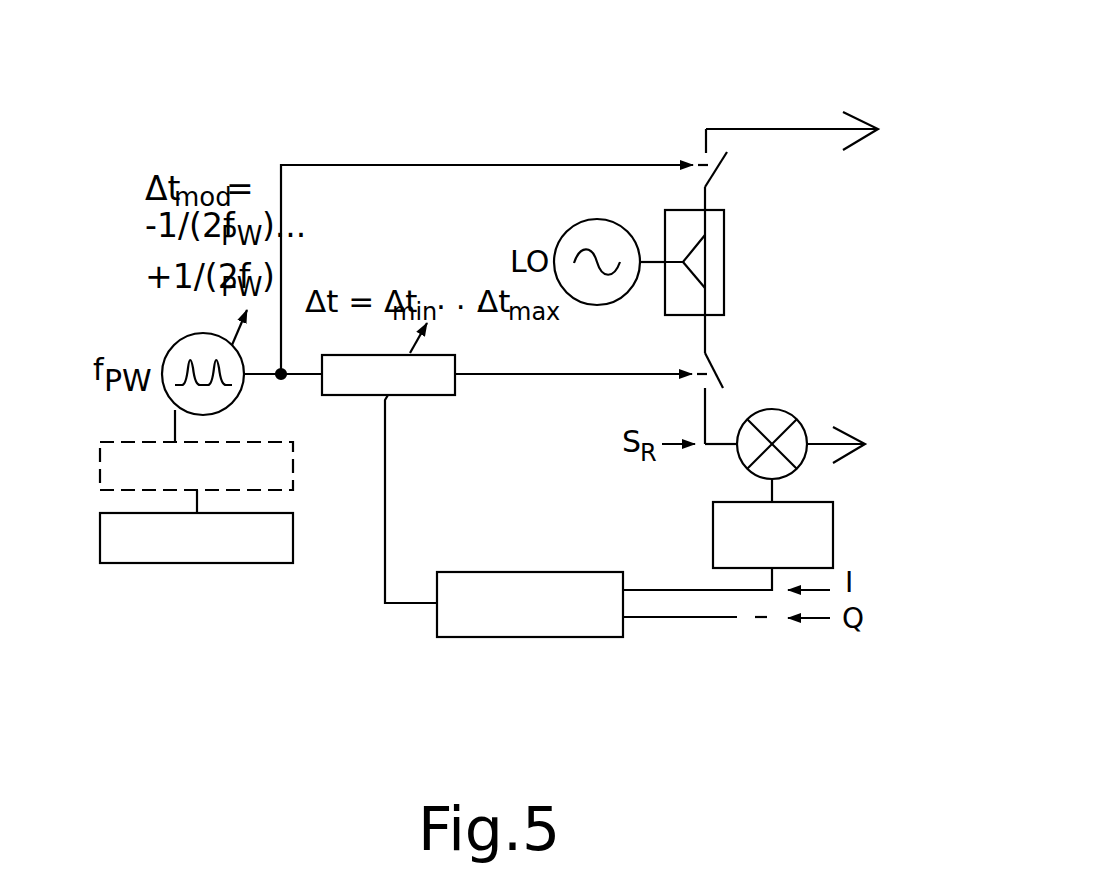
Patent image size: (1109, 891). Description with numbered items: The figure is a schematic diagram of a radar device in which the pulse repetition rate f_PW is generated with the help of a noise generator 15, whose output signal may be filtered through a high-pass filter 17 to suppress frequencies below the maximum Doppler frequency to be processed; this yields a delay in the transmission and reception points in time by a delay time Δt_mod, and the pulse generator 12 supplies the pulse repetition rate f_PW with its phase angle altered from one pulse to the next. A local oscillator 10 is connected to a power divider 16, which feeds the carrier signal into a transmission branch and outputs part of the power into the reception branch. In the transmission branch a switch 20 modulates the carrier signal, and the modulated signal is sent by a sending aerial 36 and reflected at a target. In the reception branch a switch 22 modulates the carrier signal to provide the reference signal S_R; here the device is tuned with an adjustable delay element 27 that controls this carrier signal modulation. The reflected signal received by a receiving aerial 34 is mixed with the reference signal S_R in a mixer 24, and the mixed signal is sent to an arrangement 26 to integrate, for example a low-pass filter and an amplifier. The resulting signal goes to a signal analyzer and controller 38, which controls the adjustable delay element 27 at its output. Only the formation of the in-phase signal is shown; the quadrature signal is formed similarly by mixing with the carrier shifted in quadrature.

The local oscillator 10 is at (568, 240).
The pulse generator 12 is at (172, 355).
The noise generator 15 is at (145, 553).
The power divider 16 is at (725, 247).
The high-pass filter 17 is at (97, 487).
The switch 20 is at (722, 175).
The switch 22 is at (723, 372).
The mixer 24 is at (782, 410).
The arrangement to integrate 26 is at (822, 537).
The adjustable delay element 27 is at (432, 387).
The receiving aerial 34 is at (857, 453).
The sending aerial 36 is at (872, 118).
The signal analyzer and controller 38 is at (507, 622).